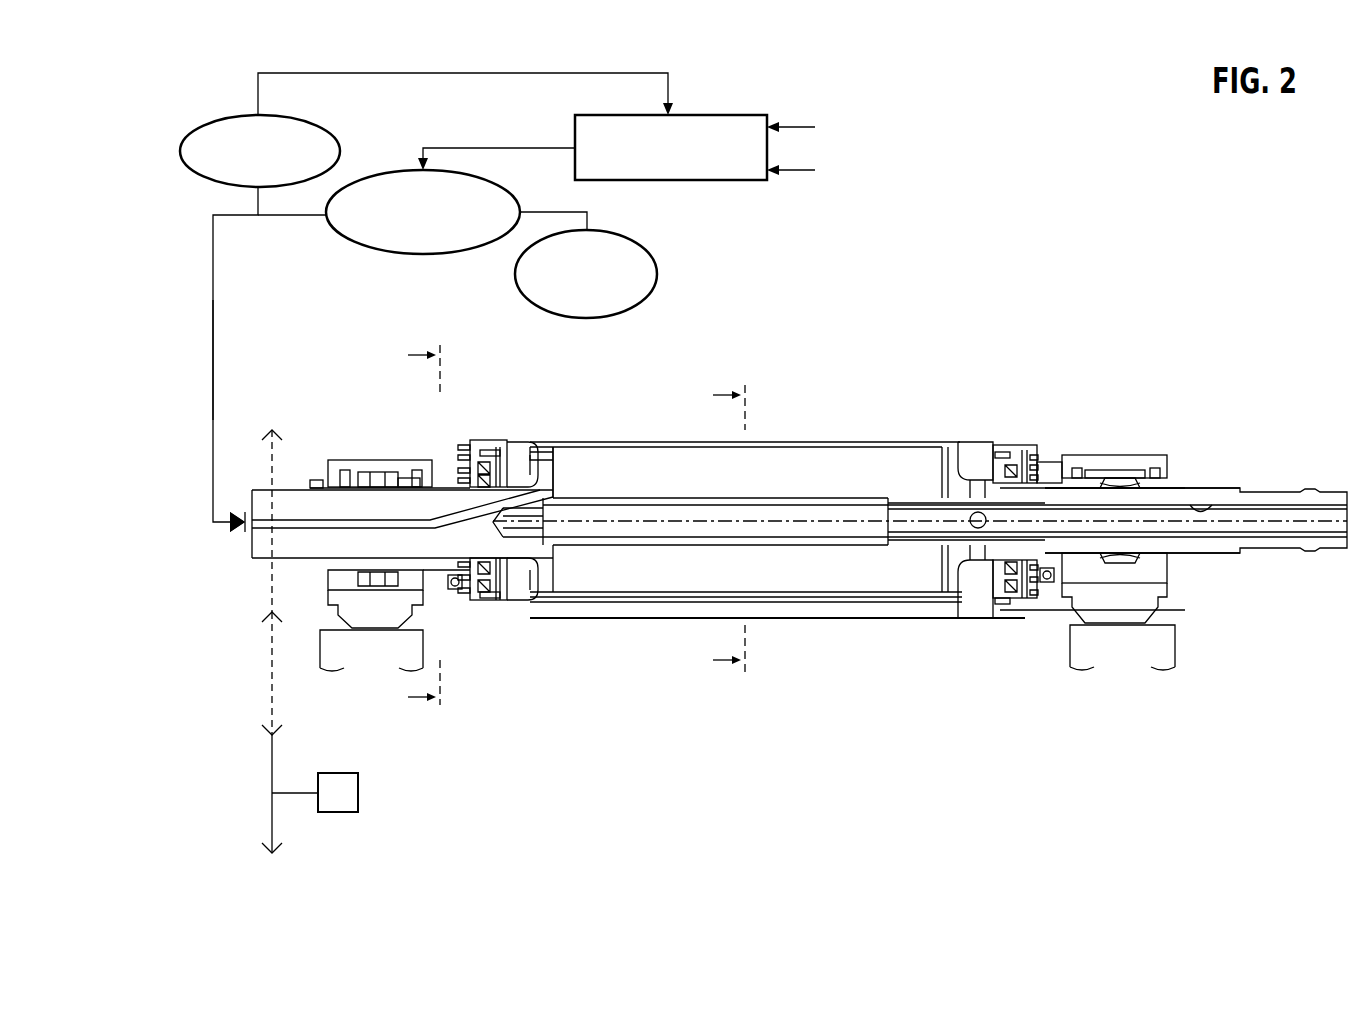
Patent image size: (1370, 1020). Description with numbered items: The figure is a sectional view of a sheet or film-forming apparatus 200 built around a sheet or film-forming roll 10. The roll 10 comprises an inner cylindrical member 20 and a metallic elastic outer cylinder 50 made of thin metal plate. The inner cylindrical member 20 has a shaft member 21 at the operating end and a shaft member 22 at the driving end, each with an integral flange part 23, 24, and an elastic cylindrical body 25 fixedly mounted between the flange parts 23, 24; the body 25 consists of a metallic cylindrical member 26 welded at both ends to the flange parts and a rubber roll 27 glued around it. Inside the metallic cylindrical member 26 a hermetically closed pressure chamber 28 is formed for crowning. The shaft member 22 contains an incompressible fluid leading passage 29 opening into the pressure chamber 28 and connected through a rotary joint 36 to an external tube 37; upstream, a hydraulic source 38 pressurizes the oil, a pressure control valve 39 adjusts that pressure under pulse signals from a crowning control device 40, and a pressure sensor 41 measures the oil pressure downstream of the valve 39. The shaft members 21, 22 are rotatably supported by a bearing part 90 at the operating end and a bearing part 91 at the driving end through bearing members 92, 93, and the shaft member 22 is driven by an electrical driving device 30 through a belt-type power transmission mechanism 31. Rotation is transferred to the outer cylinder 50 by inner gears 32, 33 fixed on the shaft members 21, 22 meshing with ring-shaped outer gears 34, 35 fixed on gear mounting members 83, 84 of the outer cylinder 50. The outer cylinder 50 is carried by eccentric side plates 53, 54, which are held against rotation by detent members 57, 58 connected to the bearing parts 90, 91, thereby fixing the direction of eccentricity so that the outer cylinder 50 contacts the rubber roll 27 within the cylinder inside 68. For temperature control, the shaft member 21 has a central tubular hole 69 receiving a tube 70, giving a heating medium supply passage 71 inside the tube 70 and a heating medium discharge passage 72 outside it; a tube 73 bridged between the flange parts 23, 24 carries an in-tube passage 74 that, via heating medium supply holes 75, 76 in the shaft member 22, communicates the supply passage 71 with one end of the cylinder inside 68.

The sheet or film-forming roll 10 is at (943, 346).
The inner cylindrical member 20 is at (970, 464).
The shaft member 21 is at (1048, 485).
The shaft member 22 is at (445, 495).
The flange part 23 is at (948, 452).
The flange part 24 is at (547, 450).
The elastic cylindrical body 25 is at (830, 600).
The metallic cylindrical member 26 is at (830, 447).
The rubber roll 27 is at (783, 442).
The pressure chamber 28 is at (620, 462).
The incompressible fluid leading passage 29 is at (297, 522).
The electrical driving device 30 is at (338, 812).
The power transmission mechanism 31 is at (256, 680).
The inner gear 32 is at (993, 567).
The inner gear 33 is at (527, 567).
The outer gear 34 is at (990, 595).
The outer gear 35 is at (503, 578).
The rotary joint 36 is at (237, 535).
The external tube 37 is at (213, 372).
The hydraulic source 38 is at (657, 260).
The pressure control valve 39 is at (424, 254).
The crowning control device 40 is at (710, 115).
The pressure sensor 41 is at (181, 148).
The metallic elastic outer cylinder 50 is at (870, 428).
The eccentric side plate 53 is at (1017, 573).
The eccentric side plate 54 is at (480, 580).
The detent member 57 is at (1052, 598).
The detent member 58 is at (437, 600).
The cylinder inside 68 is at (885, 610).
The central tubular hole 69 is at (1207, 505).
The tube 70 is at (1287, 488).
The heating medium supply passage 71 is at (1265, 523).
The heating medium discharge passage 72 is at (1258, 500).
The tube 73 is at (817, 502).
The in-tube passage 74 is at (633, 517).
The heating medium supply hole 75 is at (536, 520).
The heating medium supply hole 76 is at (515, 488).
The gear mounting member 83 is at (1022, 600).
The gear mounting member 84 is at (460, 603).
The bearing part 90 is at (1120, 458).
The bearing part 91 is at (345, 462).
The bearing member 92 is at (1138, 557).
The bearing member 93 is at (388, 476).
The sheet or film-forming apparatus 200 is at (1162, 183).